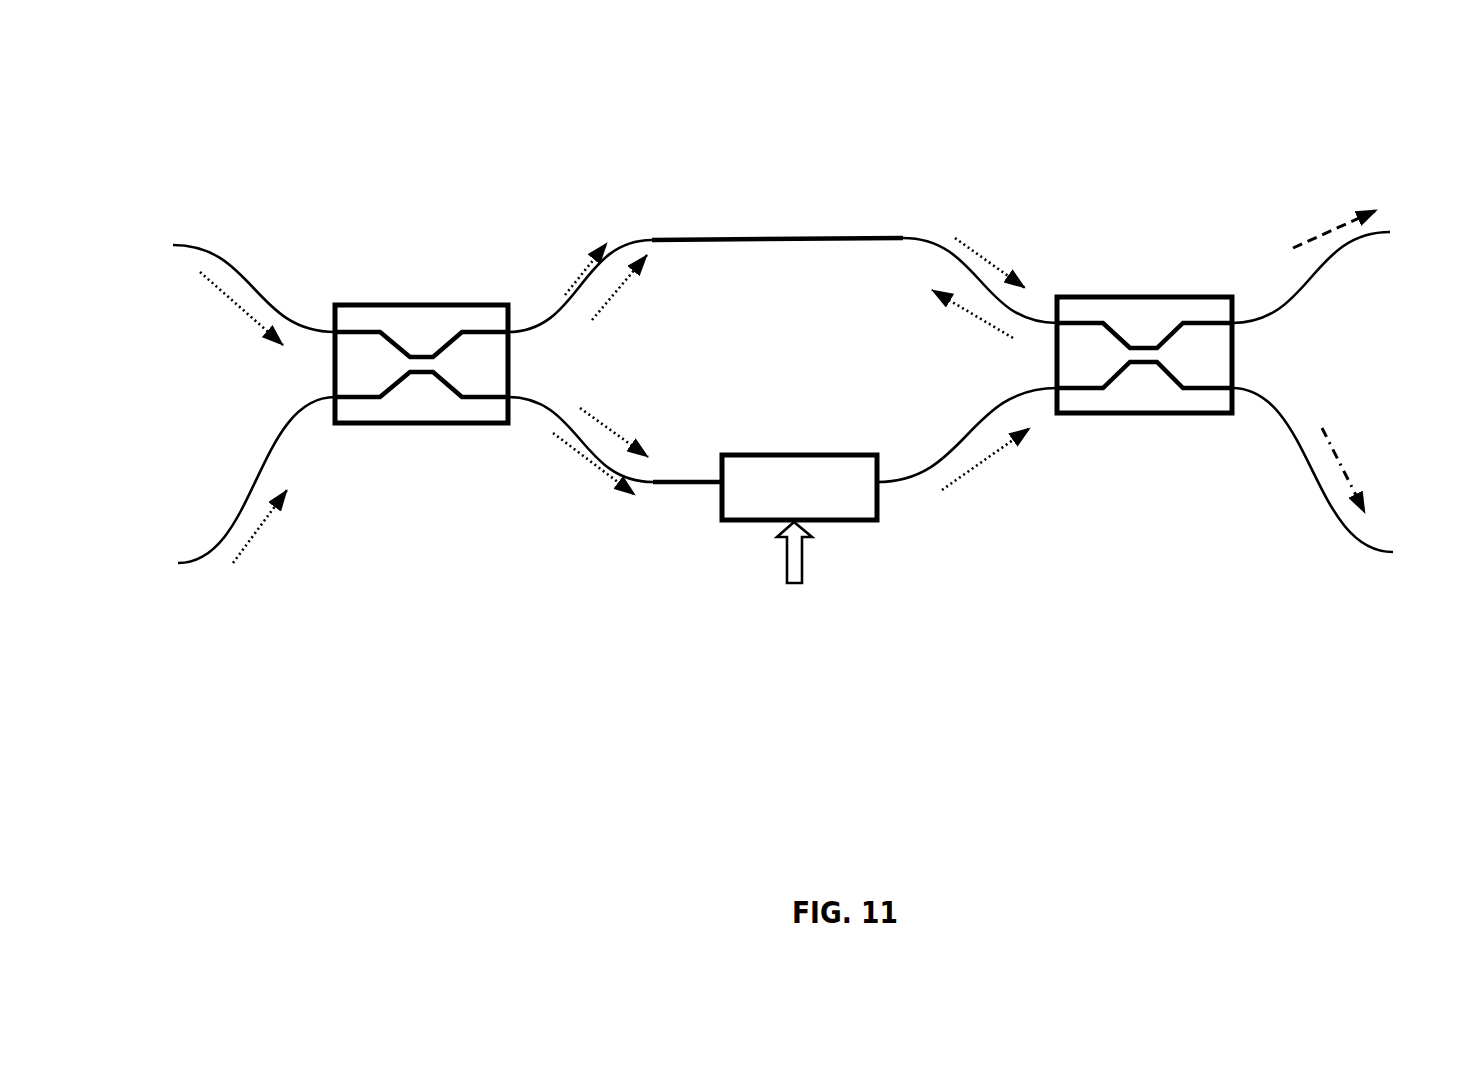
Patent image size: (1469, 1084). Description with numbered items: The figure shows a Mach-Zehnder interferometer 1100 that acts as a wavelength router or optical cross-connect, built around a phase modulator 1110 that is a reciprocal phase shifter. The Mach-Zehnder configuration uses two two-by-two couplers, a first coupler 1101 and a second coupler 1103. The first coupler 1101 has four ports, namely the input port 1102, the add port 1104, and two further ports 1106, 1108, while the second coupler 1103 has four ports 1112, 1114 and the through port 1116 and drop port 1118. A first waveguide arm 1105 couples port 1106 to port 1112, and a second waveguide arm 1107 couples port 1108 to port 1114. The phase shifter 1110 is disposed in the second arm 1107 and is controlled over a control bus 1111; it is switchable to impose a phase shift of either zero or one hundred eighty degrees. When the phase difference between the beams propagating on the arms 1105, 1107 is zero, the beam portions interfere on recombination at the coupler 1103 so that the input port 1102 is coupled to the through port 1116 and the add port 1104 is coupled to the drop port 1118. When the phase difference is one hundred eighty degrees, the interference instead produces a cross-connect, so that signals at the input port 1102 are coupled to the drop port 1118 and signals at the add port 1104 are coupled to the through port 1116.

The Mach-Zehnder interferometer 1100 is at (397, 707).
The first 2×2 coupler 1101 is at (400, 410).
The input port 1102 is at (332, 332).
The second 2×2 coupler 1103 is at (1140, 388).
The add port 1104 is at (335, 397).
The first waveguide arm 1105 is at (690, 238).
The coupler port 1106 is at (510, 332).
The second waveguide arm 1107 is at (667, 480).
The coupler port 1108 is at (513, 397).
The phase modulator 1110 is at (805, 468).
The control bus 1111 is at (793, 570).
The coupler port 1112 is at (1055, 322).
The coupler port 1114 is at (1057, 388).
The through port 1116 is at (1232, 323).
The drop port 1118 is at (1232, 388).